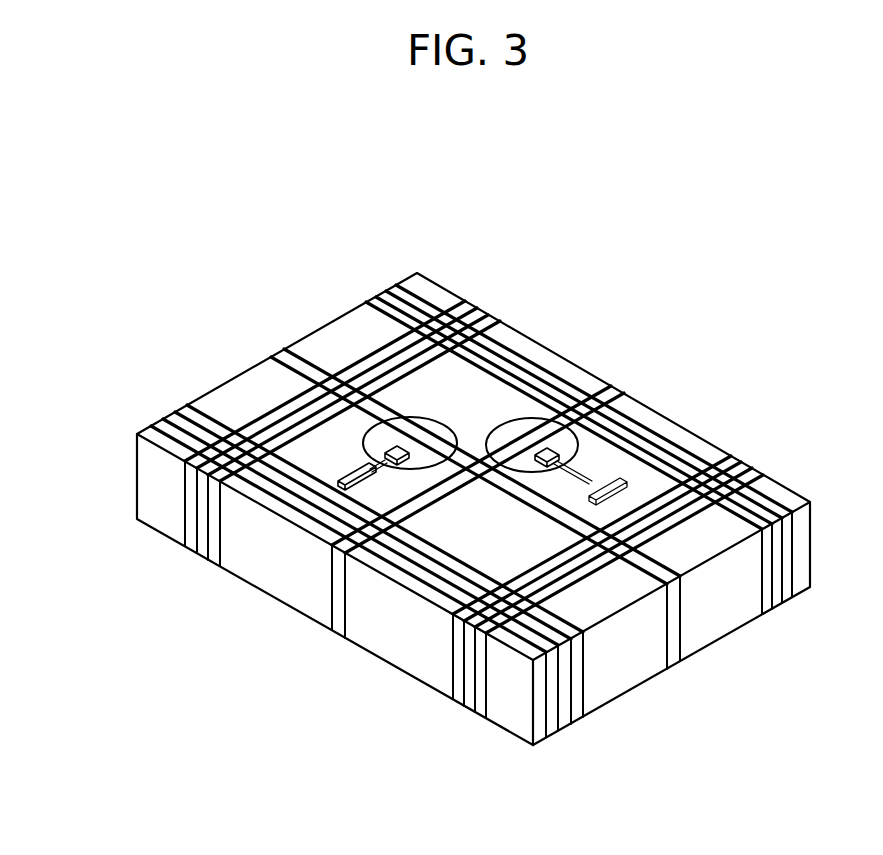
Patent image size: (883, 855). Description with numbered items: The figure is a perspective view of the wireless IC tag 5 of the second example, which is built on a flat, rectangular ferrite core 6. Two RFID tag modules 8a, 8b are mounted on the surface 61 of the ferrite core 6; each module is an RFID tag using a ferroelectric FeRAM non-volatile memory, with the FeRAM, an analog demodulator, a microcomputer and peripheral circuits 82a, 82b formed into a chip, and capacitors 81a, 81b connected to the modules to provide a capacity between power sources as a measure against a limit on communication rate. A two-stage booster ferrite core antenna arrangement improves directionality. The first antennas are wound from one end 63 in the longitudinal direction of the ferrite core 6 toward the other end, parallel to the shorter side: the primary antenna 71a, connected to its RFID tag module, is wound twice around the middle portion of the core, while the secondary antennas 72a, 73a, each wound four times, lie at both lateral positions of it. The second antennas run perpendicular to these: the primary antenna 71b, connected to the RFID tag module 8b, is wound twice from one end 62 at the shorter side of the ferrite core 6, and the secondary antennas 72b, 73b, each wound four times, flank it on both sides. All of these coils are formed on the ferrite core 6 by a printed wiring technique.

The wireless IC tag 5 is at (521, 242).
The ferrite core 6 is at (632, 656).
The surface of the ferrite core 61 is at (722, 542).
The end at the shorter side of the ferrite core 62 is at (708, 611).
The end in the longitudinal direction of the ferrite core 63 is at (405, 641).
The primary antenna 71a is at (338, 590).
The primary antenna 71b is at (290, 352).
The secondary antenna 72a is at (200, 481).
The secondary antenna 72b is at (392, 282).
The secondary antenna 73a is at (470, 647).
The secondary antenna 73b is at (165, 422).
The RFID tag module 8a is at (673, 421).
The RFID tag module 8b is at (384, 465).
The capacitor 81a is at (560, 452).
The capacitor 81b is at (345, 480).
The peripheral circuits 82a is at (628, 480).
The peripheral circuits 82b is at (393, 463).